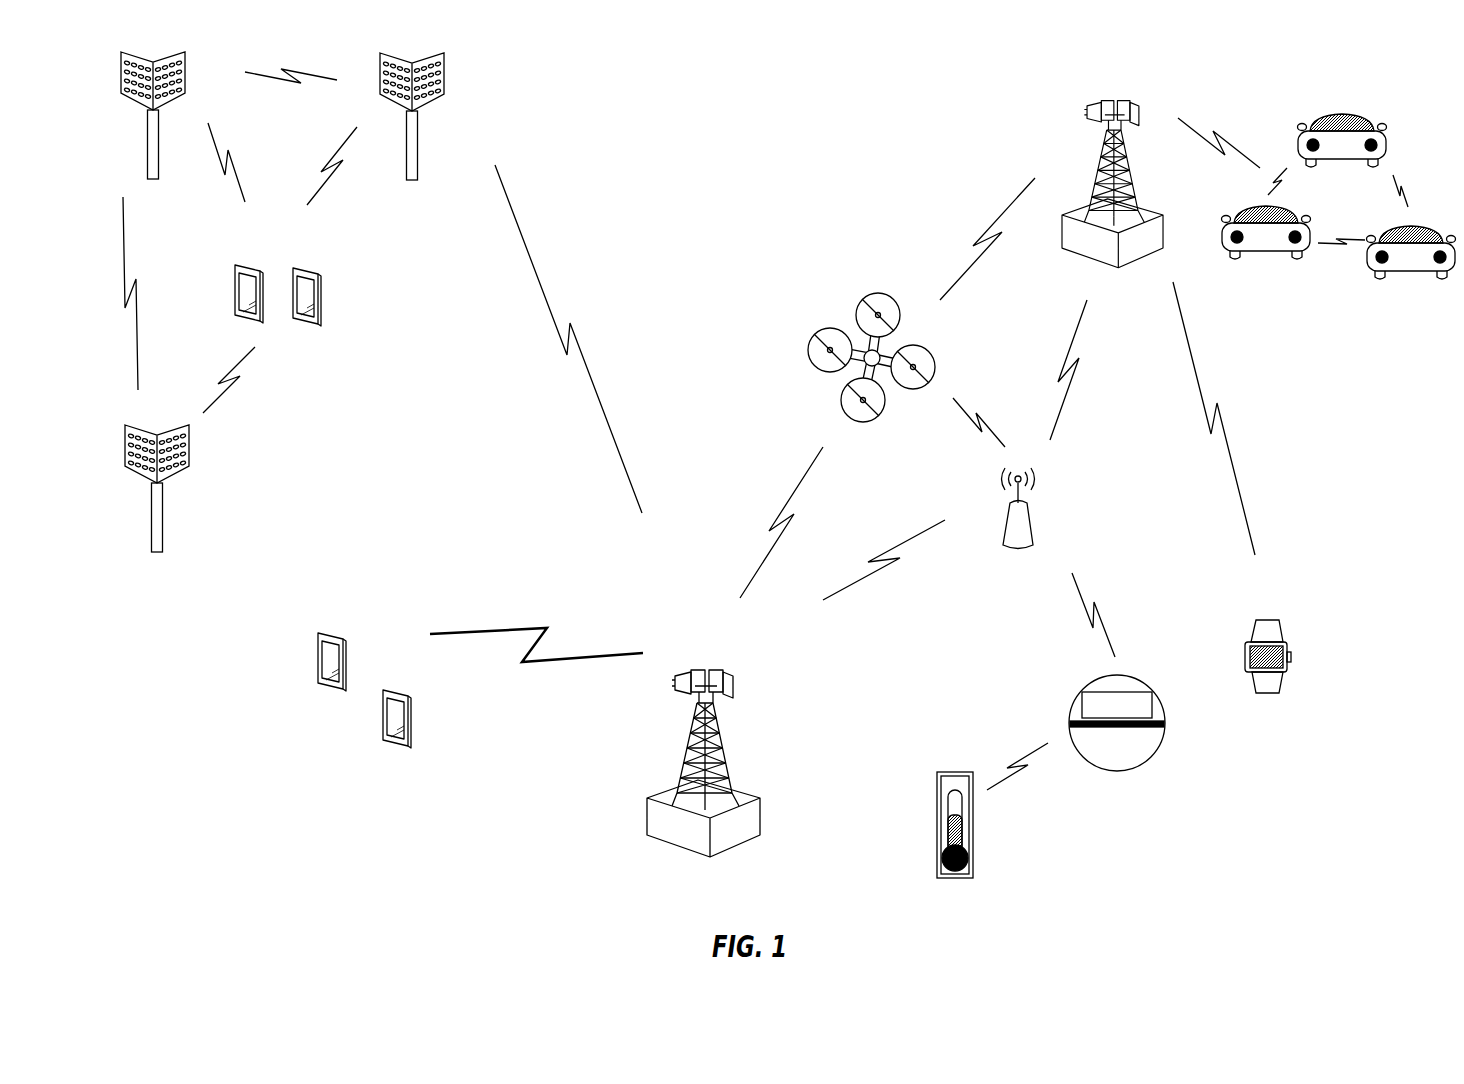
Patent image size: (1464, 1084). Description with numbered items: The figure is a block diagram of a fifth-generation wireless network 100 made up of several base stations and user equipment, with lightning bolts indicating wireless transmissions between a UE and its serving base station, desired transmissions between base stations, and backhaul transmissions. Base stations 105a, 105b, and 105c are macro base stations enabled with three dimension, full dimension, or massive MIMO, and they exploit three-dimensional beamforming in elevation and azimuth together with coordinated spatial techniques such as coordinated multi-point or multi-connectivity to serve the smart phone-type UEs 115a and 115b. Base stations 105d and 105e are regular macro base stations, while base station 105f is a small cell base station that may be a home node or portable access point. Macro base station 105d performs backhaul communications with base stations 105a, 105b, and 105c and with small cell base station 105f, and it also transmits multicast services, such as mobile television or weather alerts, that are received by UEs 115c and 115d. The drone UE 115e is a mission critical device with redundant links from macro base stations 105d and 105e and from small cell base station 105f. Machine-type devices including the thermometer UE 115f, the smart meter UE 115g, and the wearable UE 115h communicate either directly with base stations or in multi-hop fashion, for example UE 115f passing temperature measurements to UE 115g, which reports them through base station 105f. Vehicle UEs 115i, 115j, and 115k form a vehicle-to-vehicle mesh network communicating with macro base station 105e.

The 5G network 100 is at (866, 85).
The base station 105a is at (147, 150).
The base station 105b is at (417, 163).
The base station 105c is at (150, 540).
The macro base station 105d is at (665, 842).
The macro base station 105e is at (1075, 257).
The small cell base station 105f is at (1003, 545).
The UE 115a is at (235, 275).
The UE 115b is at (322, 283).
The UE 115c is at (318, 647).
The UE 115d is at (413, 703).
The UE (drone) 115e is at (810, 353).
The UE (thermometer) 115f is at (973, 863).
The UE (smart meter) 115g is at (1138, 767).
The UE (wearable device) 115h is at (1280, 687).
The UE (vehicle) 115i is at (1357, 113).
The UE (vehicle) 115j is at (1430, 277).
The UE (vehicle) 115k is at (1240, 261).